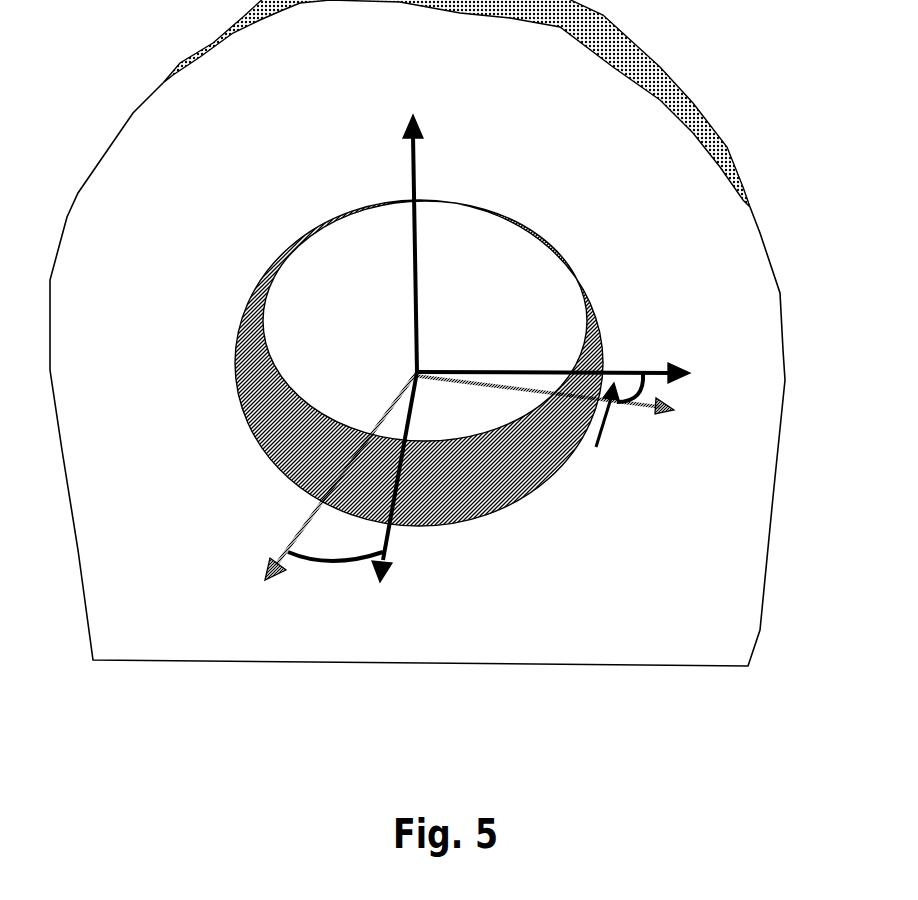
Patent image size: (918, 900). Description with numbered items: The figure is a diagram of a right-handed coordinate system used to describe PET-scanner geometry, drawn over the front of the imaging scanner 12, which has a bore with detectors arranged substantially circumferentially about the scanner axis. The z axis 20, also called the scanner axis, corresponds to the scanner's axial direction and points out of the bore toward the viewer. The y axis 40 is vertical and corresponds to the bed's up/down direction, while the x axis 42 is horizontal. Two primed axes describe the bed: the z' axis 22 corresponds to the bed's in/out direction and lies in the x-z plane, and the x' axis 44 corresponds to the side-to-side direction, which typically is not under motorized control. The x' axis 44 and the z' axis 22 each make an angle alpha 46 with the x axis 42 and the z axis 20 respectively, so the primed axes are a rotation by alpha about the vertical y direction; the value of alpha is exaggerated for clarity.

The imaging scanner 12 is at (215, 130).
The y axis 40 is at (449, 243).
The x axis 42 is at (591, 369).
The x' axis 44 is at (577, 415).
The z axis 20 is at (402, 507).
The z' axis 22 is at (308, 503).
The angle alpha 46 is at (360, 530).